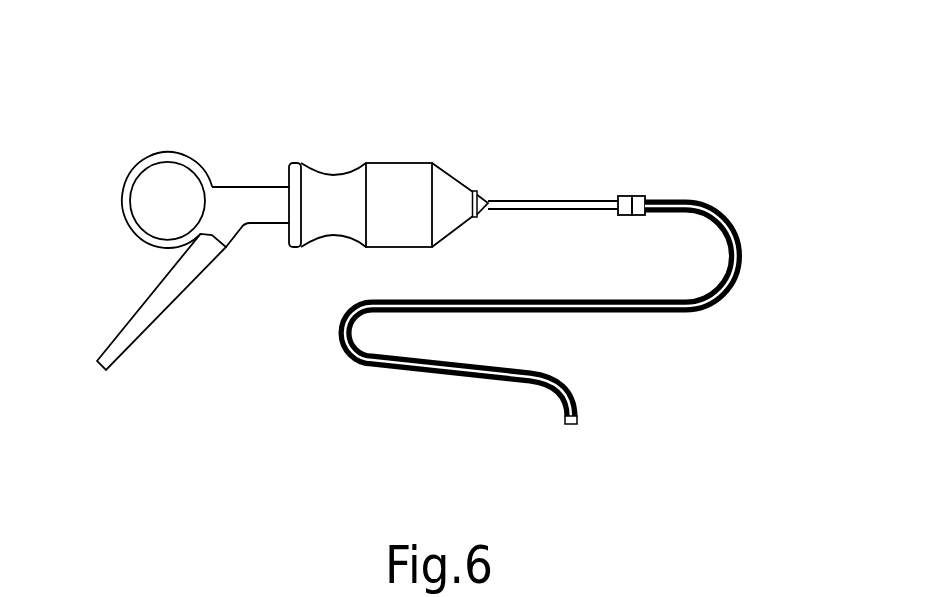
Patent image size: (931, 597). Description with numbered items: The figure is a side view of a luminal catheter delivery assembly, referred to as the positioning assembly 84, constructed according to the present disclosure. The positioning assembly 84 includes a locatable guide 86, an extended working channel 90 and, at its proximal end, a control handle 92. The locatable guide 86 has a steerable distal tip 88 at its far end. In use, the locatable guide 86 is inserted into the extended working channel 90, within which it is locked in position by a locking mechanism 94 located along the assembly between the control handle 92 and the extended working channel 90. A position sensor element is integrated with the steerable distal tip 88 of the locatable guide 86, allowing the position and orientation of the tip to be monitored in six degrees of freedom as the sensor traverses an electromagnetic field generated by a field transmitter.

The positioning assembly 84 is at (718, 147).
The control handle 92 is at (211, 117).
The locatable guide 86 is at (538, 209).
The locking mechanism 94 is at (632, 195).
The extended working channel 90 is at (743, 247).
The steerable distal tip 88 is at (564, 427).